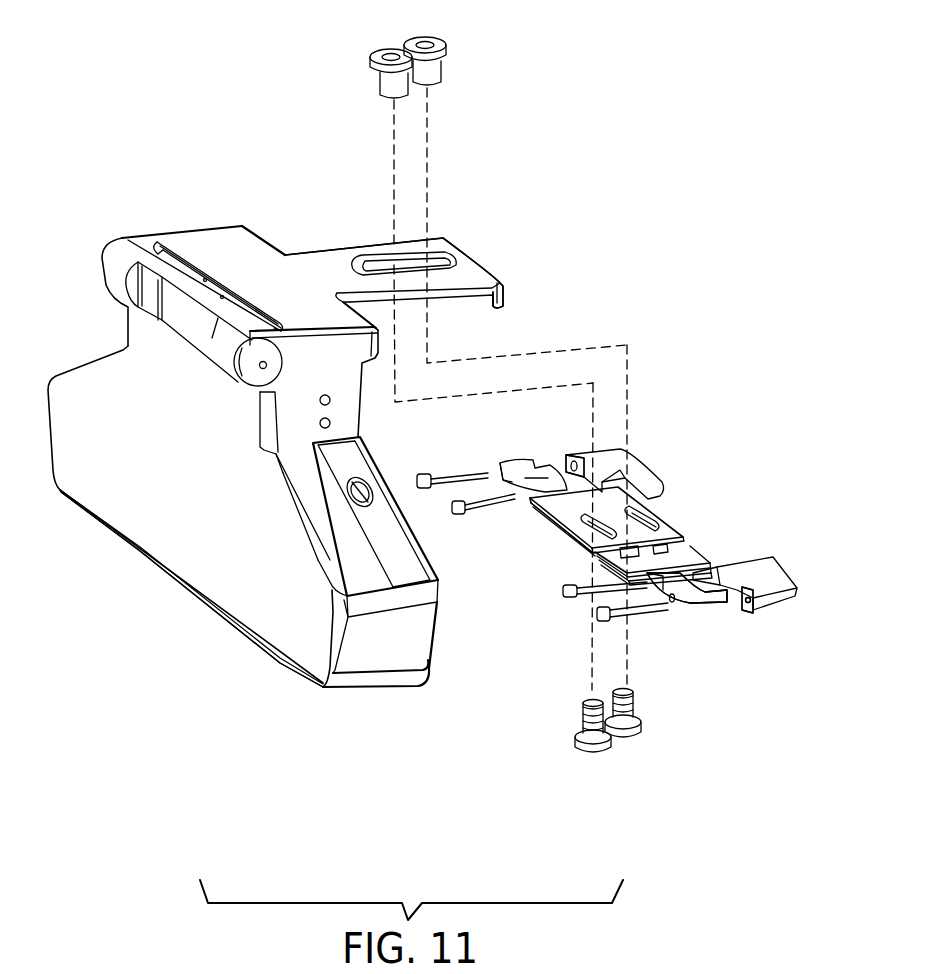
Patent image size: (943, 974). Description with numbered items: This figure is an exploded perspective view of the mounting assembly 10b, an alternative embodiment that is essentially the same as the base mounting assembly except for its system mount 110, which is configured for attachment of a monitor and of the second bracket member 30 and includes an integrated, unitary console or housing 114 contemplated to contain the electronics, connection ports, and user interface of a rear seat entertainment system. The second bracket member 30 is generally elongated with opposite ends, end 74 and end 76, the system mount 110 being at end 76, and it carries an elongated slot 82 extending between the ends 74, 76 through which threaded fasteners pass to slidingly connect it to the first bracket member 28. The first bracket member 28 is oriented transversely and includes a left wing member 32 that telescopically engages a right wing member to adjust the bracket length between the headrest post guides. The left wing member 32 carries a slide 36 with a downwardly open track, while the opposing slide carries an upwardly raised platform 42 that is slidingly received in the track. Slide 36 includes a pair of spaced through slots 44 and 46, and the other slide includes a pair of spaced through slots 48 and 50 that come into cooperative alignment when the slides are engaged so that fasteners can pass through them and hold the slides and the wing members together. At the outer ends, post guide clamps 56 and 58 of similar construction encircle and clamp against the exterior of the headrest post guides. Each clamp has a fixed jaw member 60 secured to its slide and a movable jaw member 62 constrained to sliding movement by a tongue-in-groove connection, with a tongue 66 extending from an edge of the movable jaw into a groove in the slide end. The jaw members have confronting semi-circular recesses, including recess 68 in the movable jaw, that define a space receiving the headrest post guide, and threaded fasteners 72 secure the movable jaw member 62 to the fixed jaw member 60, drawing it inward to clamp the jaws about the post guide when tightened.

The mounting assembly 10b is at (200, 126).
The first bracket member 28 is at (667, 517).
The second bracket member 30 is at (341, 250).
The left wing member 32 is at (530, 511).
The slide 36 is at (545, 512).
The upwardly raised platform 42 is at (708, 562).
The through slot 44 is at (595, 546).
The through slot 46 is at (630, 510).
The through slot 48 is at (613, 573).
The through slot 50 is at (703, 553).
The post guide clamp 56 is at (620, 452).
The post guide clamp 58 is at (781, 567).
The fixed jaw member 60 is at (578, 452).
The movable jaw member 62 is at (515, 474).
The tongue 66 is at (733, 591).
The semi-circular recess 68 is at (718, 604).
The threaded fasteners 72 is at (488, 480).
The end 74 is at (472, 254).
The end 76 is at (294, 268).
The elongated slot 82 is at (410, 252).
The system mount 110 is at (283, 383).
The housing 114 is at (211, 519).